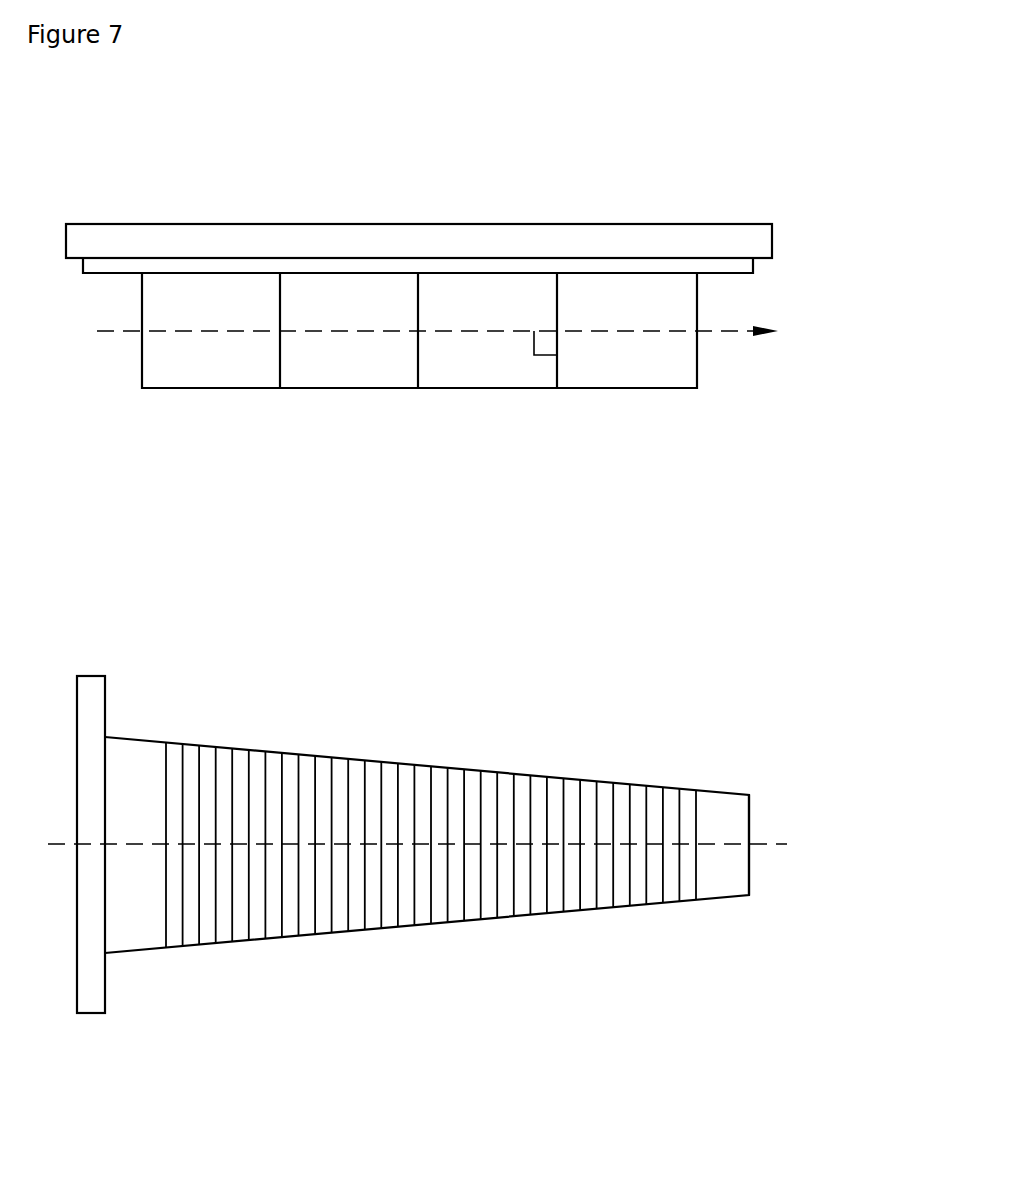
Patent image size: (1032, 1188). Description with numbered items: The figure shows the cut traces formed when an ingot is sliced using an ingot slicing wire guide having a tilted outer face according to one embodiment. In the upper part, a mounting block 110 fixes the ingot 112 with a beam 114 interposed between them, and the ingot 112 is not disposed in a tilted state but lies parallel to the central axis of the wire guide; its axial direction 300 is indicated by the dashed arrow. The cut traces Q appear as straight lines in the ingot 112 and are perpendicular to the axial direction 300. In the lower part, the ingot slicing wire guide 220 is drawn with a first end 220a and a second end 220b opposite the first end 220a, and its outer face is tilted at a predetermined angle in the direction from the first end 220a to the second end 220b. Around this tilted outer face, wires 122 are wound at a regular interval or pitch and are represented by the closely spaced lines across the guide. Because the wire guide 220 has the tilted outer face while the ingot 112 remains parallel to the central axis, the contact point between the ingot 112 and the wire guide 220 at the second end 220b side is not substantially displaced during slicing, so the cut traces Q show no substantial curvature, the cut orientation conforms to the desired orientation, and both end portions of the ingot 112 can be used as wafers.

The mounting block 110 is at (590, 238).
The beam 114 is at (685, 267).
The ingot 112 is at (602, 370).
The cut traces Q is at (280, 362).
The axial direction 300 is at (725, 331).
The ingot slicing wire guide 220 is at (782, 791).
The first end 220a is at (140, 765).
The second end 220b is at (724, 808).
The wires 122 is at (697, 868).